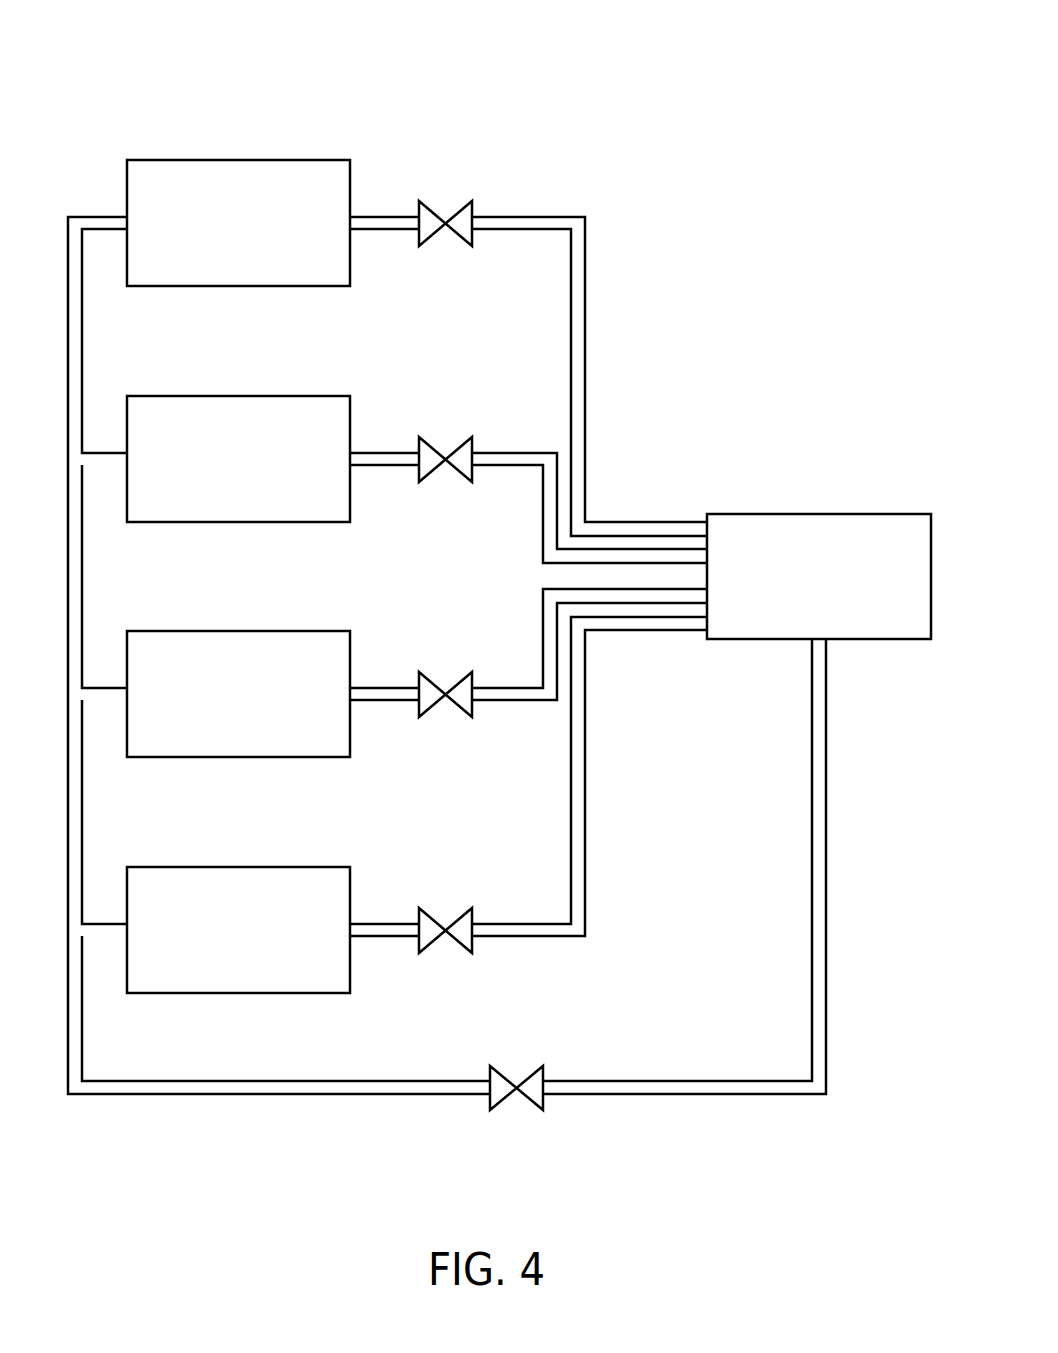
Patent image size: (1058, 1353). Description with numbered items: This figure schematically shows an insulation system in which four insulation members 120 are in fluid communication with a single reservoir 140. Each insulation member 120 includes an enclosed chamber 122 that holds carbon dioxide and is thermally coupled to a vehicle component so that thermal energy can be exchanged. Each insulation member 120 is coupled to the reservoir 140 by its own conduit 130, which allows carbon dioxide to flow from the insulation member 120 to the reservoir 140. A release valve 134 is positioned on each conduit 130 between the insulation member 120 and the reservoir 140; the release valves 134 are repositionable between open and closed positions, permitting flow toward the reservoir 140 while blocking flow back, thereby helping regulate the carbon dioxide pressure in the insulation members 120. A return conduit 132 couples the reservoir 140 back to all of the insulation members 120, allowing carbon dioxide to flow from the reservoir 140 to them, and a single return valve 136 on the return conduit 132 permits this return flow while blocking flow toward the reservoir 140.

The insulation member 120 is at (142, 150).
The enclosed chamber 122 is at (214, 150).
The conduit 130 is at (387, 213).
The return conduit 132 is at (667, 1098).
The release valve 134 is at (453, 203).
The return valve 136 is at (515, 1099).
The reservoir 140 is at (832, 510).